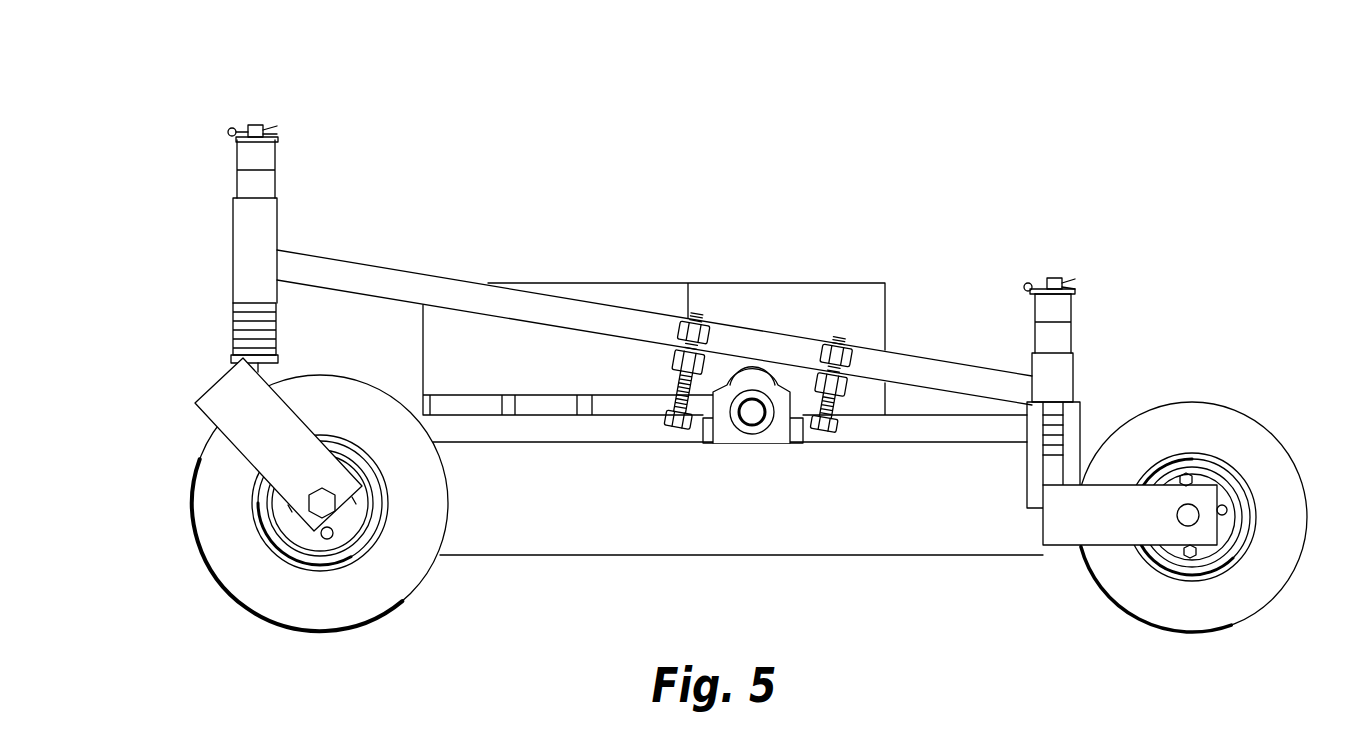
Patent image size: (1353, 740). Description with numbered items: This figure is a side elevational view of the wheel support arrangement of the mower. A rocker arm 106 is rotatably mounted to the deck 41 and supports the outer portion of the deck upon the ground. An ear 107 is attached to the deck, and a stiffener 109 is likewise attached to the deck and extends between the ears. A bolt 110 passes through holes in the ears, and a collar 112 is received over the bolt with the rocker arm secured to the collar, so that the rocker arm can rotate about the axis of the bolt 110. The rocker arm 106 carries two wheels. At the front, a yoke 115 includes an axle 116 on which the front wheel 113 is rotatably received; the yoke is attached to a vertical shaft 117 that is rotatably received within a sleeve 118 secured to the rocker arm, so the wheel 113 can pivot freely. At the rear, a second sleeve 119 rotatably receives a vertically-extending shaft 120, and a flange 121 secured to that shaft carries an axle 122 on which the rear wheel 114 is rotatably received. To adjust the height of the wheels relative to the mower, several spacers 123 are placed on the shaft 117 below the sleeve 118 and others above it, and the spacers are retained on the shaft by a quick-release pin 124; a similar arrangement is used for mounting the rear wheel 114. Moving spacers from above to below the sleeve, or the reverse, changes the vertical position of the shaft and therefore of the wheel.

The deck 41 is at (895, 512).
The rocker arm 106 is at (923, 375).
The ear 107 is at (772, 432).
The stiffener 109 is at (707, 435).
The bolt 110 is at (748, 432).
The collar 112 is at (753, 418).
The wheel 113 is at (325, 386).
The wheel 114 is at (1220, 425).
The yoke 115 is at (262, 436).
The axle 116 is at (318, 494).
The vertical shaft 117 is at (260, 127).
The sleeve 118 is at (252, 254).
The second sleeve 119 is at (1050, 365).
The vertically-extending shaft 120 is at (1060, 283).
The flange 121 is at (1110, 527).
The axle 122 is at (1192, 518).
The spacers 123 is at (265, 155).
The quick-release pin 124 is at (230, 130).